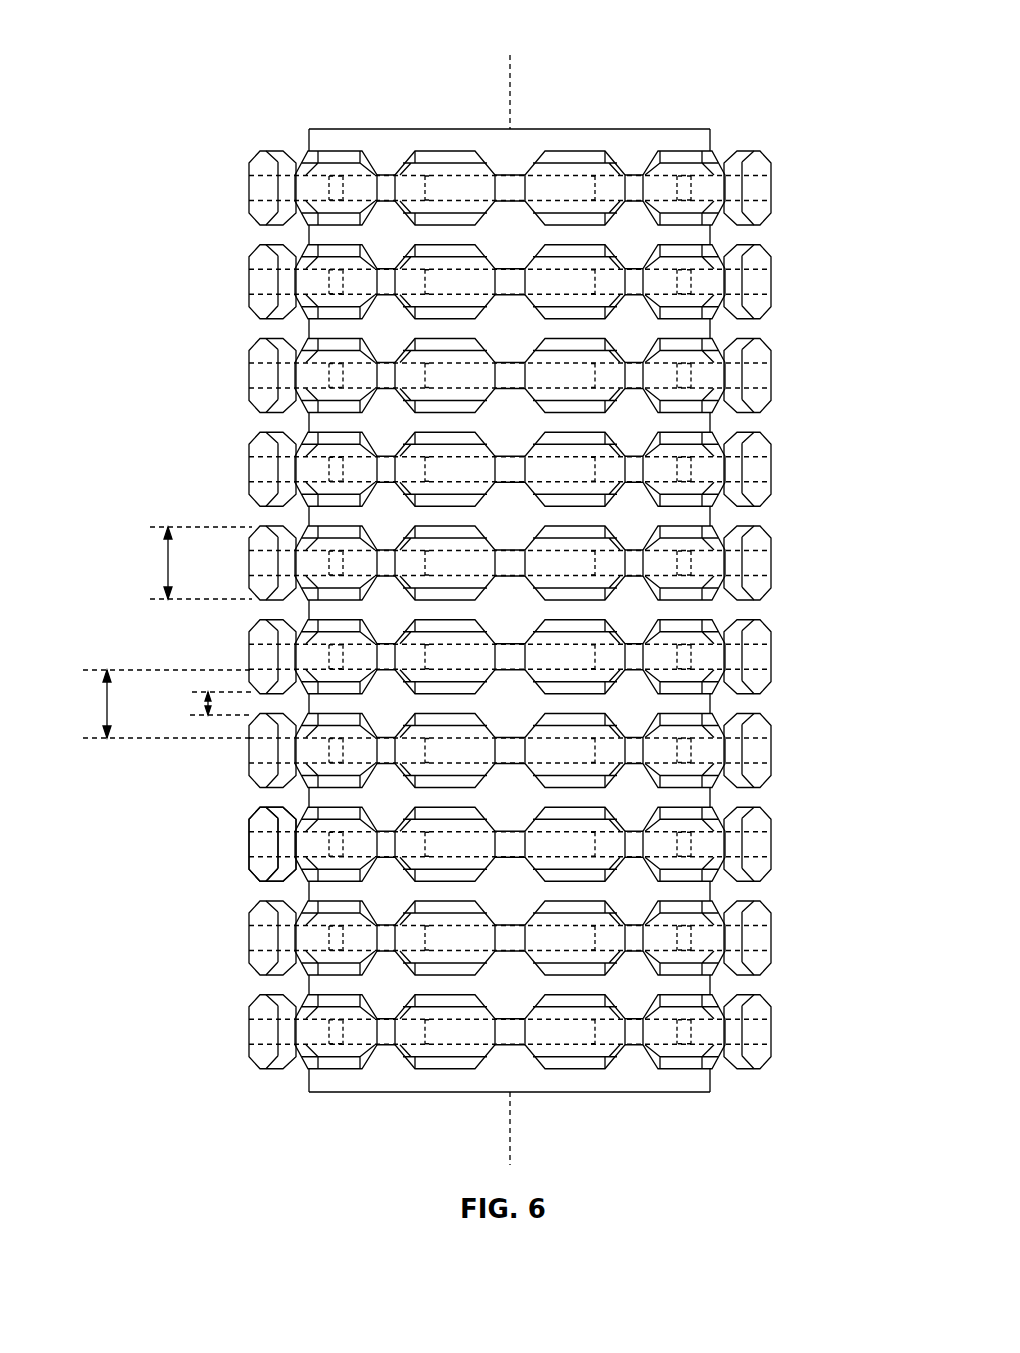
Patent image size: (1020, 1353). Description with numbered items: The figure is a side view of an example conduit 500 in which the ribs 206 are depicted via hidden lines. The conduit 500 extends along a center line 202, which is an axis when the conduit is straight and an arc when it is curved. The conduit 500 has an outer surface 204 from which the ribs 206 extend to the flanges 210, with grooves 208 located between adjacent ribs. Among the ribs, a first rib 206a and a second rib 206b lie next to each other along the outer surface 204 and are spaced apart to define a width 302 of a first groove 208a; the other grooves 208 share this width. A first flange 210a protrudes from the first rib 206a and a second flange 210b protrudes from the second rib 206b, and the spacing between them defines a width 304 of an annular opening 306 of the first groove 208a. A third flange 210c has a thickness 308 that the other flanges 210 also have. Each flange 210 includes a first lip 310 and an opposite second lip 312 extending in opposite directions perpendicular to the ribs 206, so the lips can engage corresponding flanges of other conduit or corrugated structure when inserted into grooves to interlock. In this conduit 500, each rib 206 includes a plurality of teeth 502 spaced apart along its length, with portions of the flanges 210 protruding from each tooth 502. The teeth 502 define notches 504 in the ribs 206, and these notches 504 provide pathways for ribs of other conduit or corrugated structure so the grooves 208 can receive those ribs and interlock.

The conduit 500 is at (527, 611).
The center line 202 is at (512, 93).
The outer surface 204 is at (633, 145).
The ribs 206 is at (556, 158).
The first rib 206a is at (577, 780).
The second rib 206b is at (529, 630).
The grooves 208 is at (738, 237).
The first groove 208a is at (748, 703).
The flanges 210 is at (757, 155).
The first flange 210a is at (763, 768).
The second flange 210b is at (763, 640).
The third flange 210c is at (763, 545).
The width 302 is at (107, 703).
The width 304 is at (207, 704).
The opening 306 is at (272, 703).
The thickness 308 is at (168, 563).
The first lip 310 is at (270, 808).
The second lip 312 is at (255, 870).
The teeth 502 is at (337, 1032).
The notches 504 is at (385, 1049).